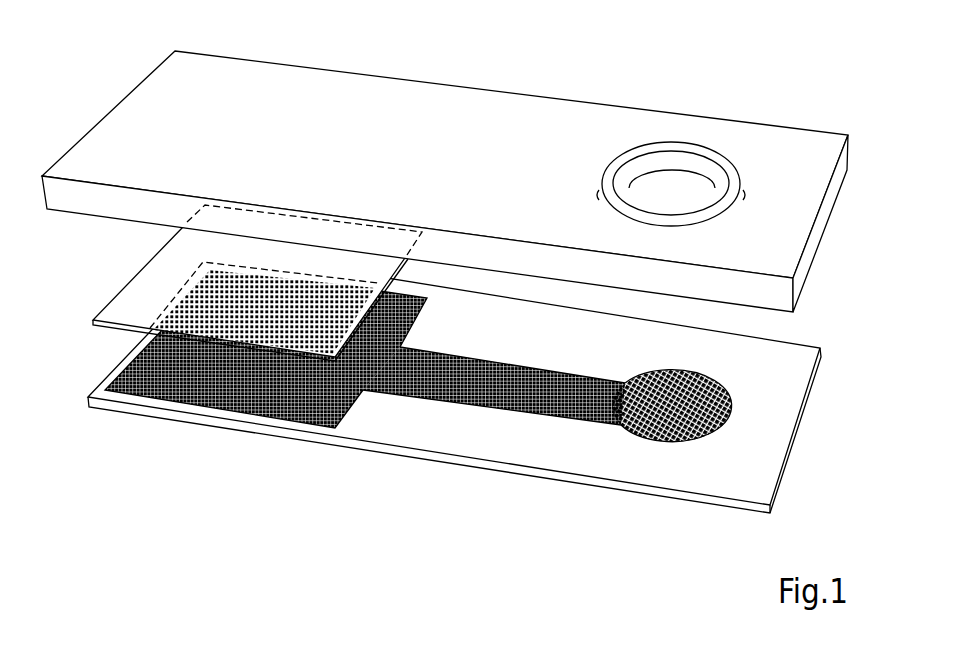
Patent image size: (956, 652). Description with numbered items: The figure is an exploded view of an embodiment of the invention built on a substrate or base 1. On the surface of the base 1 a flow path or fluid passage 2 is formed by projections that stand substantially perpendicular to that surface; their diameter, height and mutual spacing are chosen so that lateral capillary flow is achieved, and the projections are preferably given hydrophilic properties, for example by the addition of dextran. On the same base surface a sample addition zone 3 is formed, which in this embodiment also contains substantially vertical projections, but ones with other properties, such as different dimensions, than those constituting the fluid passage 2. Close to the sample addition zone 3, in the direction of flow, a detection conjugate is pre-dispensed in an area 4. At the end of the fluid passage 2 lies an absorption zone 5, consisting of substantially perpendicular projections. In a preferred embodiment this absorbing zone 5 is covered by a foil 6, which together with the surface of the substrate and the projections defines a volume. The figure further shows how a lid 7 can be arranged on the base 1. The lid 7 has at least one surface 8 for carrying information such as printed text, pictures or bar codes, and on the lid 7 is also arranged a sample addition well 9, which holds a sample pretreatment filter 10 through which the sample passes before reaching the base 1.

The substrate or base 1 is at (464, 382).
The fluid passage 2 is at (462, 356).
The sample addition zone 3 is at (717, 432).
The area 4 is at (822, 449).
The absorption zone 5 is at (243, 412).
The foil 6 is at (143, 268).
The lid 7 is at (445, 158).
The surface 8 is at (365, 157).
The sample addition well 9 is at (693, 180).
The sample pretreatment filter 10 is at (686, 197).